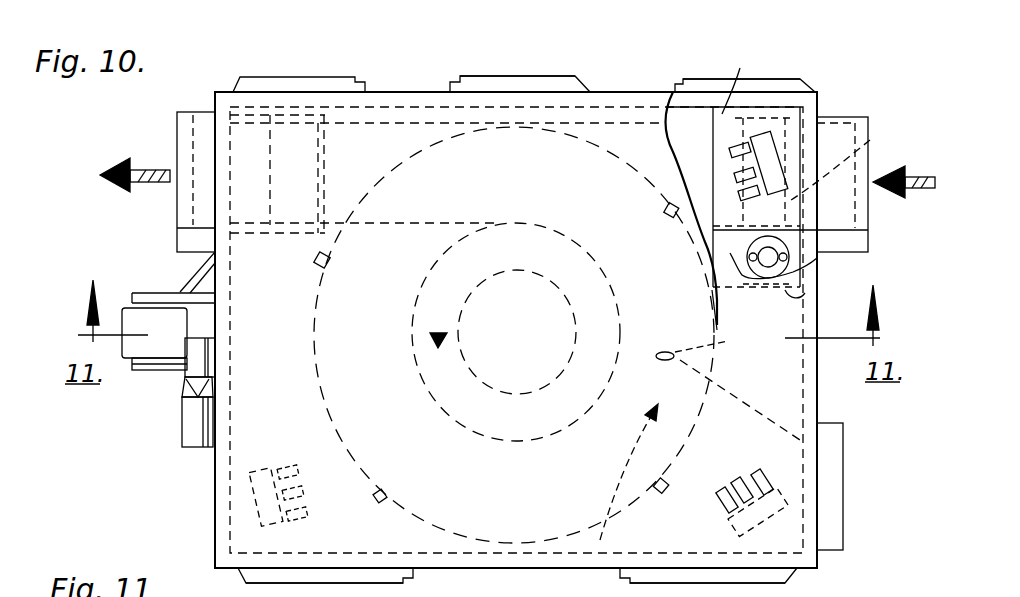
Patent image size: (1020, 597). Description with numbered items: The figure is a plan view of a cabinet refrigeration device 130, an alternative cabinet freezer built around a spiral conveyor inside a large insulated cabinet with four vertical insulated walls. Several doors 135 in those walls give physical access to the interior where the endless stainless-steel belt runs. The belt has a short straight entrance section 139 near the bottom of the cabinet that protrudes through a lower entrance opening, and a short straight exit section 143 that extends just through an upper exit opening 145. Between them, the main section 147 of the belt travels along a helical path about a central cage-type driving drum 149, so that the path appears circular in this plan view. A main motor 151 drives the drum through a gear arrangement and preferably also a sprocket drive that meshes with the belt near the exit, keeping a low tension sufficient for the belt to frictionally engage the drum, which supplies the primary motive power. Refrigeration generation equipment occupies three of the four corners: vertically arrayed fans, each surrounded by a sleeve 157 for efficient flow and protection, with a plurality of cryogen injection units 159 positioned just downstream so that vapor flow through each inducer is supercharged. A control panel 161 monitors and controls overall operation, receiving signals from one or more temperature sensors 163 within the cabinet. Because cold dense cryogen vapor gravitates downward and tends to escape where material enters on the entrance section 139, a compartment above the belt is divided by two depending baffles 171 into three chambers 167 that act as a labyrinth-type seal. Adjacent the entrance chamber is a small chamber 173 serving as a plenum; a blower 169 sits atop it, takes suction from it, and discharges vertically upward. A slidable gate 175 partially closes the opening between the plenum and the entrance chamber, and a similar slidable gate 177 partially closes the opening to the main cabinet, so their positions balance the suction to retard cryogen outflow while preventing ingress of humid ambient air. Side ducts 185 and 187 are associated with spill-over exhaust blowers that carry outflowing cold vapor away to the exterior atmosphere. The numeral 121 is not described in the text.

The base plate 121 is at (487, 580).
The cabinet refrigeration device 130 is at (863, 100).
The doors 135 is at (578, 58).
The straight entrance section 139 is at (708, 152).
The straight exit section 143 is at (373, 153).
The upper exit opening 145 is at (337, 575).
The main section of the endless belt 147 is at (540, 515).
The central cage-type driving drum 149 is at (462, 415).
The main motor 151 is at (197, 413).
The sleeve 157 is at (765, 195).
The cryogen injection units 159 is at (740, 140).
The control panel 161 is at (832, 516).
The temperature sensors 163 is at (728, 390).
The chambers 167 is at (750, 79).
The blower 169 is at (790, 262).
The depending baffles 171 is at (855, 163).
The small chamber 173 is at (743, 313).
The slidable gate 175 is at (705, 255).
The slidable gate 177 is at (800, 294).
The side duct 185 is at (848, 242).
The side duct 187 is at (188, 236).